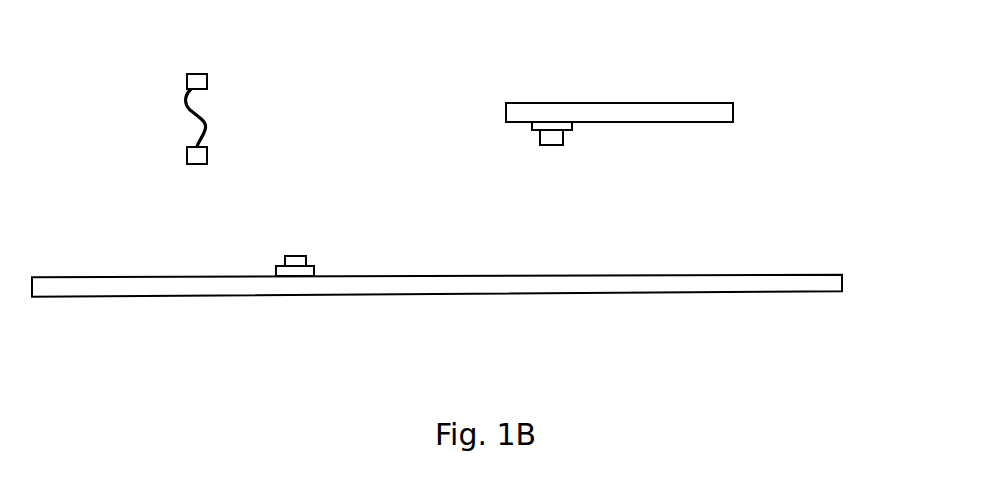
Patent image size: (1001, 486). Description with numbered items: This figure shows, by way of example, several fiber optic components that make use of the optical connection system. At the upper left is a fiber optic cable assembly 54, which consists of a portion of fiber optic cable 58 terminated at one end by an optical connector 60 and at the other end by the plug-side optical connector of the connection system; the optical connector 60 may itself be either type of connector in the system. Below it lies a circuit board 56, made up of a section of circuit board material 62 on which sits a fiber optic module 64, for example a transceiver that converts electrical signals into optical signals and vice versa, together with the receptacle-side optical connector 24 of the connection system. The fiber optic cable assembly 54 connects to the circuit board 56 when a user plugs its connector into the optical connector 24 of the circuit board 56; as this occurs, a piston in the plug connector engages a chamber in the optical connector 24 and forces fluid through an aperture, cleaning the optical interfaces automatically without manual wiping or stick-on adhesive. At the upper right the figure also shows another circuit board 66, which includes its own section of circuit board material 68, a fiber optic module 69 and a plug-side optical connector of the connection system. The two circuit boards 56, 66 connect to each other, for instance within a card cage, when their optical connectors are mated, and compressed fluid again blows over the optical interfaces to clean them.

The fiber optic cable assembly 54 is at (255, 72).
The optical connector 60 is at (187, 74).
The fiber optic cable 58 is at (188, 107).
The circuit board 66 is at (737, 70).
The circuit board material 68 is at (733, 115).
The fiber optic module 69 is at (533, 126).
The circuit board 56 is at (835, 250).
The circuit board material 62 is at (842, 285).
The fiber optic module 64 is at (315, 272).
The optical connector 24 is at (287, 257).